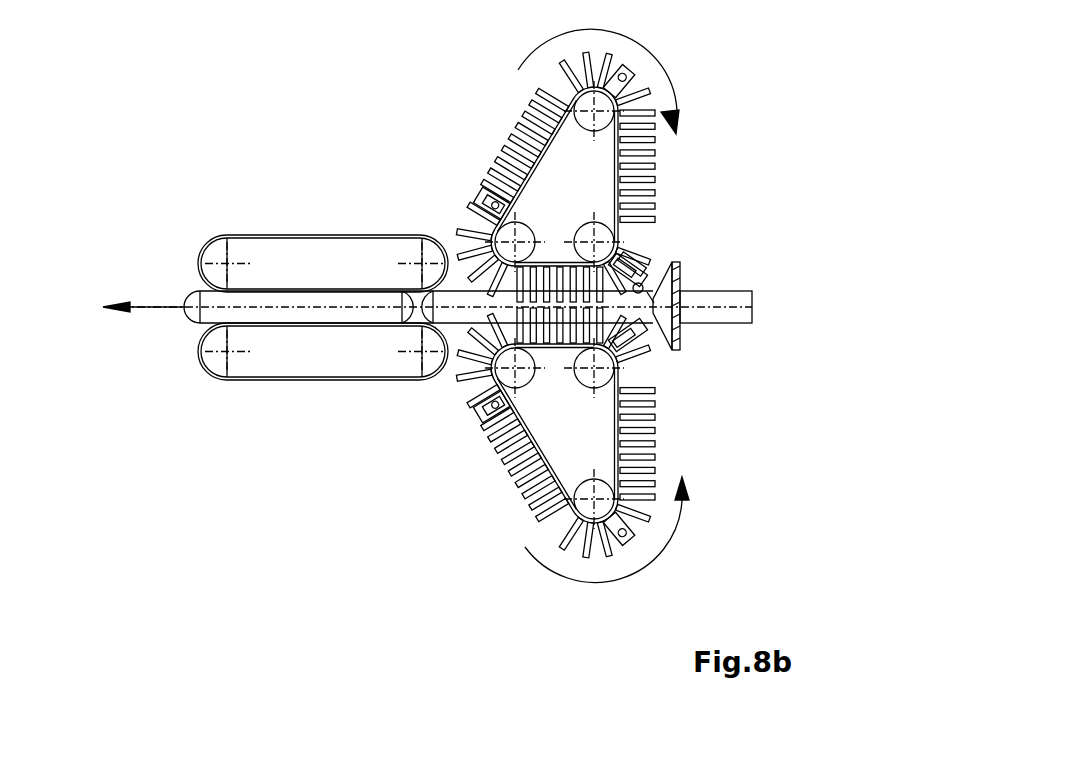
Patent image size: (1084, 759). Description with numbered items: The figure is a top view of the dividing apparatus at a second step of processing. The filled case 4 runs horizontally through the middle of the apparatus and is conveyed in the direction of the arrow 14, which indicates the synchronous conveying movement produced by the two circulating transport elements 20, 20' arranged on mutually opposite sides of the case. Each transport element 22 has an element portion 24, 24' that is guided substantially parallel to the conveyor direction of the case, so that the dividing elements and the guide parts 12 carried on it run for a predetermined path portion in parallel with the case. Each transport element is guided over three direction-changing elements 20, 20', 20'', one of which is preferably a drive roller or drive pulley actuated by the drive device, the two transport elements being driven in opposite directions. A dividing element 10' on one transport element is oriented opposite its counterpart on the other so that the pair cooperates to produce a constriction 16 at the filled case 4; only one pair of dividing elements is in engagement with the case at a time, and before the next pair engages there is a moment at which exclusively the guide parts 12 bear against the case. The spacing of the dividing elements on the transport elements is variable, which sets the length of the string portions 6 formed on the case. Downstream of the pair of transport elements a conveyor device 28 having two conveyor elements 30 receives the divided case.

The filled case 4 is at (642, 305).
The string portion 6 is at (213, 314).
The dividing element 10' is at (586, 204).
The guide part 12 is at (523, 112).
The arrow 14 is at (152, 300).
The constriction 16 is at (416, 325).
The transport element 20 is at (632, 347).
The transport element 20' is at (645, 321).
The direction-changing element 20'' is at (487, 356).
The transport element 22 is at (672, 461).
The element portion 24 is at (667, 358).
The element portion 24' is at (665, 244).
The conveyor device 28 is at (237, 206).
The conveyor element 30 is at (303, 238).